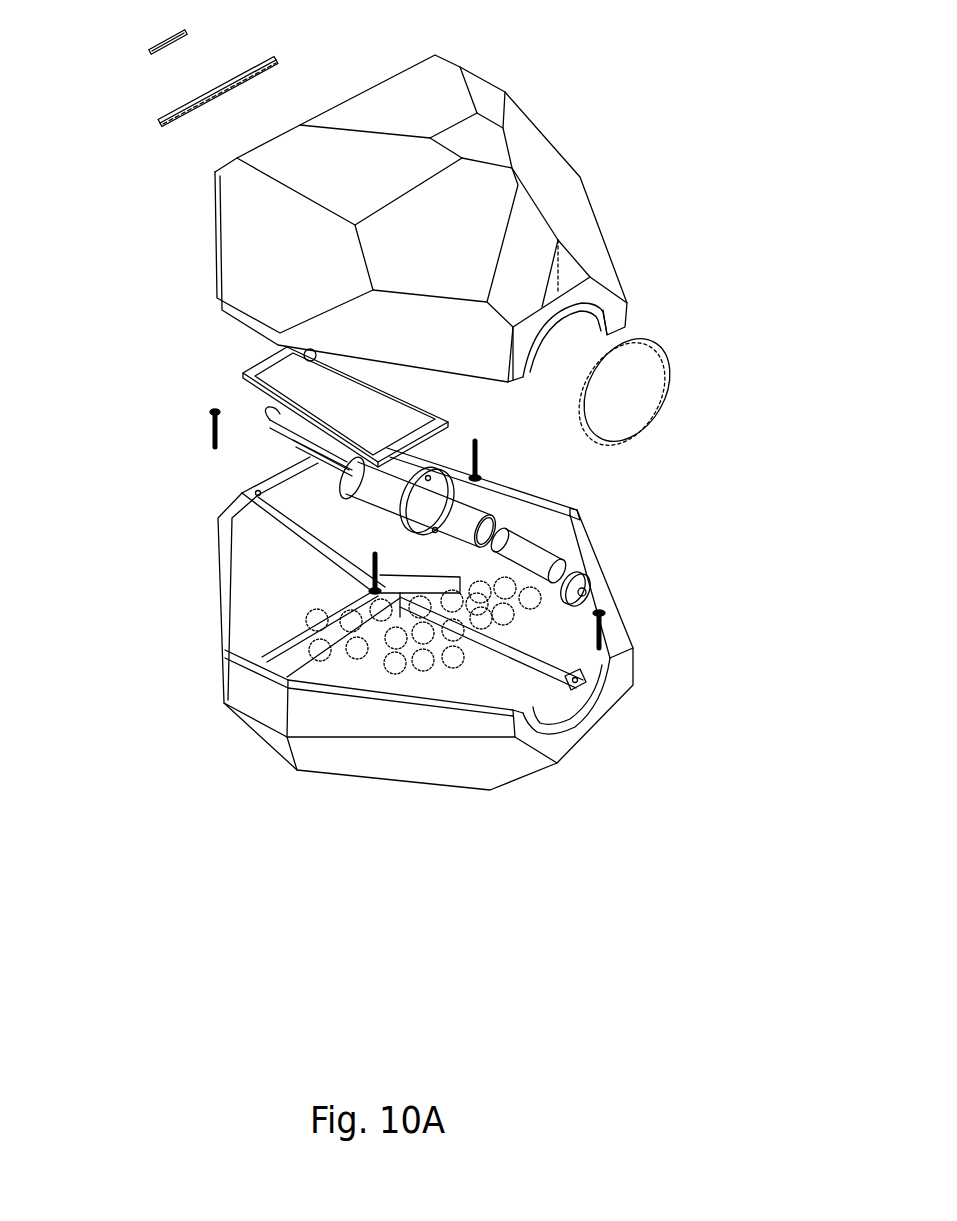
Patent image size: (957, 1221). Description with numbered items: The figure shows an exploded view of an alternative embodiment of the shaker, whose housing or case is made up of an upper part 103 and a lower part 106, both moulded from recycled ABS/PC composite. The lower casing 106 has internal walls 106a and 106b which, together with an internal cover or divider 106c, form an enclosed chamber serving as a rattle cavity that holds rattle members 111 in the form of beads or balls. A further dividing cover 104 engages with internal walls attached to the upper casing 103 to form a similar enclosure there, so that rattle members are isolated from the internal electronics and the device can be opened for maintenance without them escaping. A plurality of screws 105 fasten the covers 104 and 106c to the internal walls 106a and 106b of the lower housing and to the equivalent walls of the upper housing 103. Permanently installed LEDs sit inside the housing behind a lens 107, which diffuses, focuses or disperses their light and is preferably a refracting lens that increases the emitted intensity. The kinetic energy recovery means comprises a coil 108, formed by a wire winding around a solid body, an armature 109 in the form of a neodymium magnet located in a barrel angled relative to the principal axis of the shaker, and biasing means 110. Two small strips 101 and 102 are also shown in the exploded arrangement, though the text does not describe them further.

The light guide strip 101 is at (148, 30).
The light guide strip 102 is at (148, 93).
The upper part 103 is at (627, 183).
The dividing cover 104 is at (248, 360).
The screws 105 is at (193, 418).
The lower part 106 is at (190, 631).
The internal wall 106a is at (293, 655).
The internal wall 106b is at (548, 680).
The internal cover 106c is at (333, 519).
The lens 107 is at (685, 403).
The coil 108 is at (457, 503).
The armature 109 is at (527, 555).
The biasing means 110 is at (603, 585).
The rattle members 111 is at (517, 628).